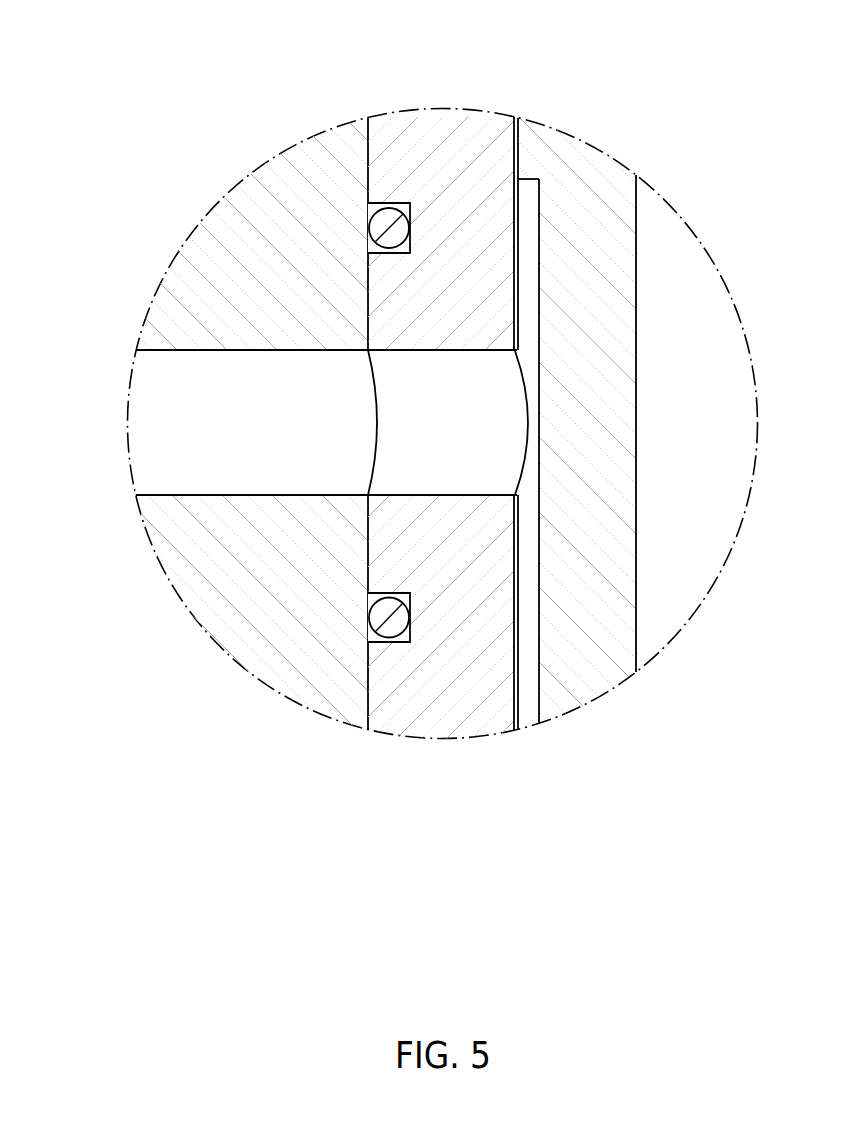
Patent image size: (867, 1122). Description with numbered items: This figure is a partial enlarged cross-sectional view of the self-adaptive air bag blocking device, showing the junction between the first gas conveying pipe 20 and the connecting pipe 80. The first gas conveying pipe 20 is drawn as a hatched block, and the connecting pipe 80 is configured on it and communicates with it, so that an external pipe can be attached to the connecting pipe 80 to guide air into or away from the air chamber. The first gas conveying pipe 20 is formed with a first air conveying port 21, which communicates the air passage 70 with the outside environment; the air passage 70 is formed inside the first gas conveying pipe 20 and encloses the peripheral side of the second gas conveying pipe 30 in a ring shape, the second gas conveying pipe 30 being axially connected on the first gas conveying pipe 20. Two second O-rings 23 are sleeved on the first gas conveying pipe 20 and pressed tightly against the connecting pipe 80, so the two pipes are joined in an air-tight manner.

The first gas conveying pipe 20 is at (366, 158).
The first air conveying port 21 is at (420, 495).
The second O-ring 23 is at (368, 218).
The second gas conveying pipe 30 is at (513, 143).
The air passage 70 is at (517, 598).
The connecting pipe 80 is at (218, 556).